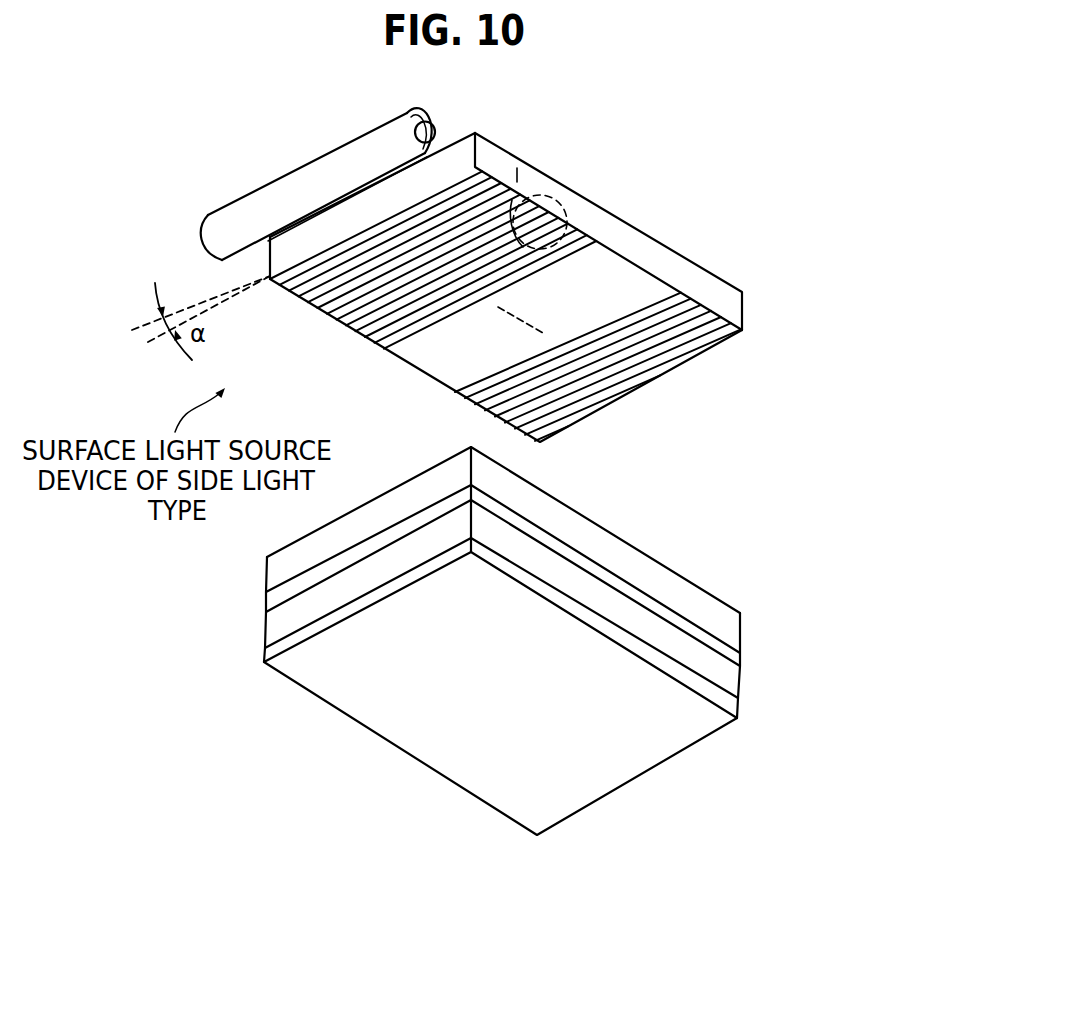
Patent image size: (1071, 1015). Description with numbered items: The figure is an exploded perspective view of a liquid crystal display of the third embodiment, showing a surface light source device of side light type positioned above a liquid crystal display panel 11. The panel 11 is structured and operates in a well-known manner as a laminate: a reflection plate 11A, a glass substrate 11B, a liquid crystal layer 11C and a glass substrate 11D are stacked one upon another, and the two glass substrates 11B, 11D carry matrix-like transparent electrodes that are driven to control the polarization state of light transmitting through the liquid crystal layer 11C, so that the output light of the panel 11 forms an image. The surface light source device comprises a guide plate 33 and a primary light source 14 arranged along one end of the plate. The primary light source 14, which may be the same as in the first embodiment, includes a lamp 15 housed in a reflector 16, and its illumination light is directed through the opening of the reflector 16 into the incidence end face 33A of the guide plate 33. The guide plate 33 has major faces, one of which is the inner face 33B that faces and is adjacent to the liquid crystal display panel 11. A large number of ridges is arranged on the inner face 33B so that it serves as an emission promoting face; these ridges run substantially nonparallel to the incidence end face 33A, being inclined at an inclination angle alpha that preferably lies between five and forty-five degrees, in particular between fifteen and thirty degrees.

The liquid crystal display panel 11 is at (505, 652).
The reflection plate 11A is at (697, 722).
The glass substrate 11B is at (735, 692).
The liquid crystal layer 11C is at (735, 655).
The glass substrate 11D is at (735, 619).
The primary light source 14 is at (330, 160).
The fluorescent lamp 15 is at (436, 122).
The reflector 16 is at (383, 147).
The guide plate 33 is at (441, 287).
The incidence end face 33A is at (281, 256).
The inner face 33B is at (423, 338).